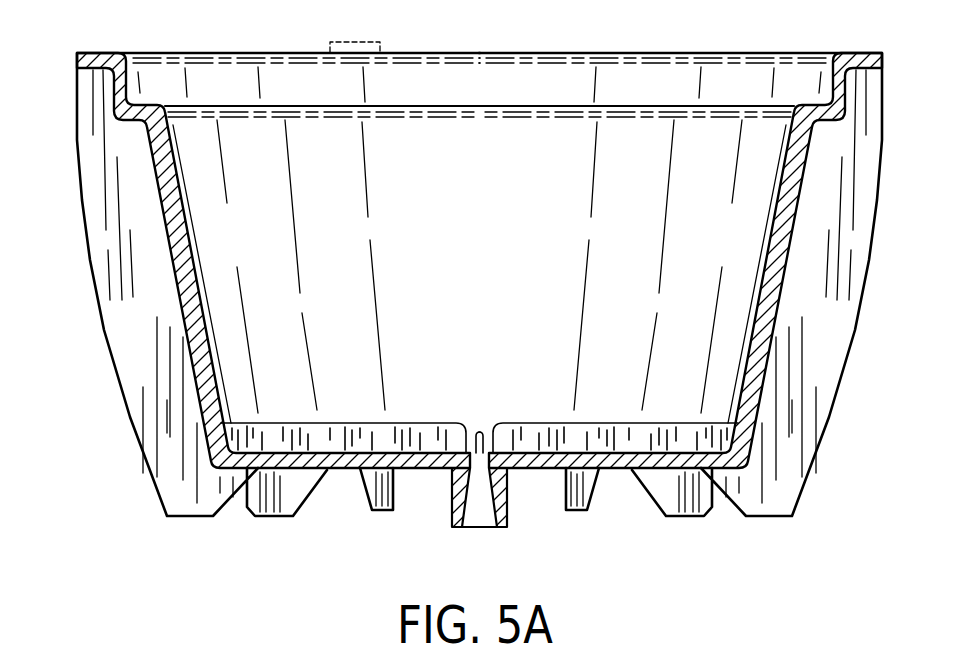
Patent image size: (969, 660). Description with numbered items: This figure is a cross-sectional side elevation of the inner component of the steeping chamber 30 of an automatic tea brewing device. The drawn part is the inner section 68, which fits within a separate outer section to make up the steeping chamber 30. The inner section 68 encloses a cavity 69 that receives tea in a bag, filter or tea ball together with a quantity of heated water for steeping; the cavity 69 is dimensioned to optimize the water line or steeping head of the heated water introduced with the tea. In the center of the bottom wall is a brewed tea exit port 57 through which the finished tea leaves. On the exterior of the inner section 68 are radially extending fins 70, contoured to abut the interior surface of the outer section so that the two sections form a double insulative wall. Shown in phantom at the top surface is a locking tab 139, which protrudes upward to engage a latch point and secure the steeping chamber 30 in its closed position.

The steeping chamber 30 is at (128, 419).
The radially extending fins 70 is at (138, 313).
The inner section 68 is at (187, 270).
The cavity 69 is at (503, 185).
The brewed tea exit port 57 is at (482, 512).
The locking tab 139 is at (370, 43).